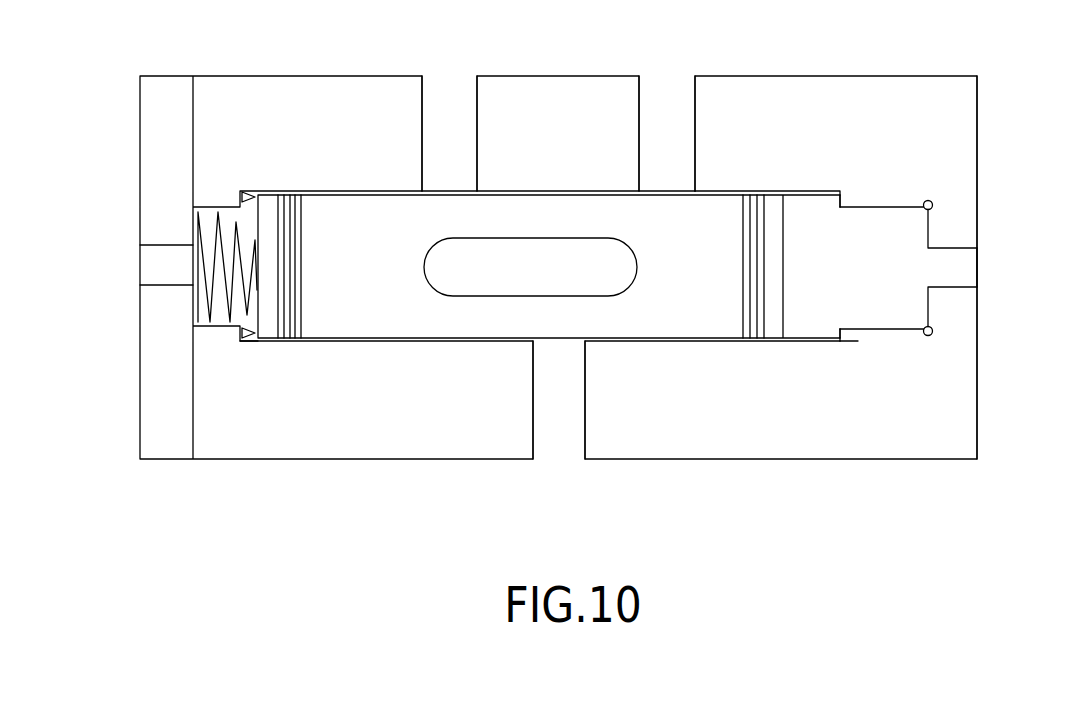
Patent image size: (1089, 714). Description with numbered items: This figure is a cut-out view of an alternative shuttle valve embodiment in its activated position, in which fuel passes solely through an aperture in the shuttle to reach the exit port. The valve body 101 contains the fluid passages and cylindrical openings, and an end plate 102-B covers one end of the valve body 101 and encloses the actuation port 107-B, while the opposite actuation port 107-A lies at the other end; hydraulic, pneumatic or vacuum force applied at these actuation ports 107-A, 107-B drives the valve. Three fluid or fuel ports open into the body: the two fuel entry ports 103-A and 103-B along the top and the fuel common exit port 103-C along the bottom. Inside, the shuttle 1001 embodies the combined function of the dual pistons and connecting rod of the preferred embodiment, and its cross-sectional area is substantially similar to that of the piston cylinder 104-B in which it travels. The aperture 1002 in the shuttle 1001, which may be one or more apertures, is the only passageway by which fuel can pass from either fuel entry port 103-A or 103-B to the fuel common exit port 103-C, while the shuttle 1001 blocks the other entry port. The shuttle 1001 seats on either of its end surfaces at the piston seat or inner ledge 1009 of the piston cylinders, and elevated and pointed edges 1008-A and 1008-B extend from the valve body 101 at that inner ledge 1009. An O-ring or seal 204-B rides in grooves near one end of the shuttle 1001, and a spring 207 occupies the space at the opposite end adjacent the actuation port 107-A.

The valve body 101 is at (312, 144).
The end plate 102-B is at (957, 101).
The fuel entry port 103-A is at (447, 93).
The fuel entry port 103-B is at (665, 97).
The fuel common exit port 103-C is at (561, 437).
The piston cylinder 104-B is at (855, 254).
The actuation port 107-A is at (158, 265).
The actuation port 107-B is at (962, 264).
The shuttle 1001 is at (329, 278).
The aperture 1002 is at (508, 278).
The elevated and pointed edge 1008-A is at (836, 199).
The elevated and pointed edge 1008-B is at (246, 193).
The piston seat or inner ledge 1009 is at (238, 341).
The O-ring or seal 204-B is at (748, 341).
The spring 207 is at (228, 327).